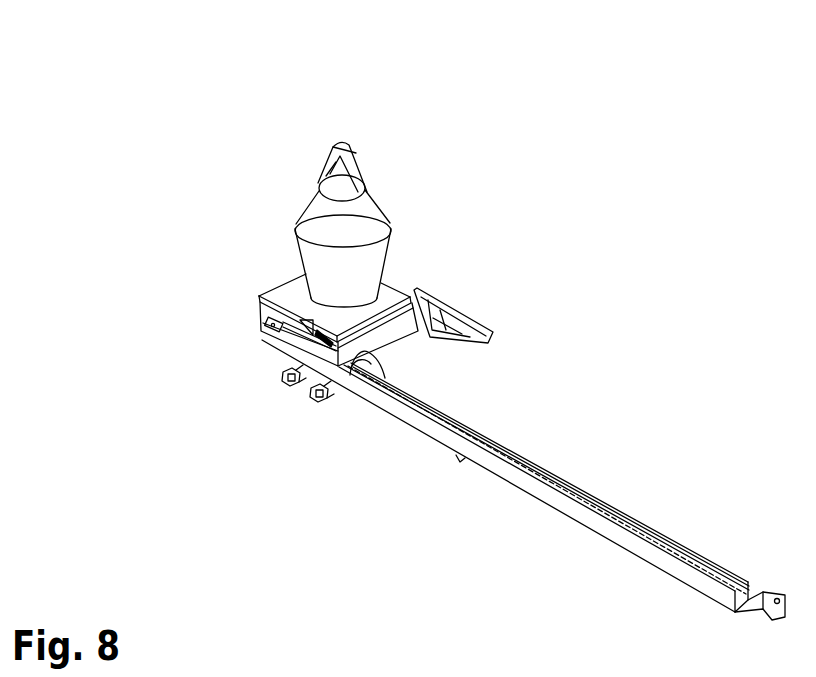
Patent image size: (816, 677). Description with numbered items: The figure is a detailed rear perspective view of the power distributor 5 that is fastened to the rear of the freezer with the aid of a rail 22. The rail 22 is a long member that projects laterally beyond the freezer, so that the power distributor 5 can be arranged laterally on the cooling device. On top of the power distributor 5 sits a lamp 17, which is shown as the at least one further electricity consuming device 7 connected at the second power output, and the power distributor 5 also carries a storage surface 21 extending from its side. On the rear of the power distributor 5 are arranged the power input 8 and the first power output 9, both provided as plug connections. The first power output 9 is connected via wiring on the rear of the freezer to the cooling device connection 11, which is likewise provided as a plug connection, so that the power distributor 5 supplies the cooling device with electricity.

The power distributor 5 is at (297, 293).
The further electricity consuming device 7 is at (379, 138).
The power input 8 is at (282, 378).
The first power output 9 is at (339, 428).
The cooling device connection 11 is at (317, 405).
The lamp 17 is at (332, 279).
The storage surface 21 is at (467, 317).
The rail 22 is at (660, 557).